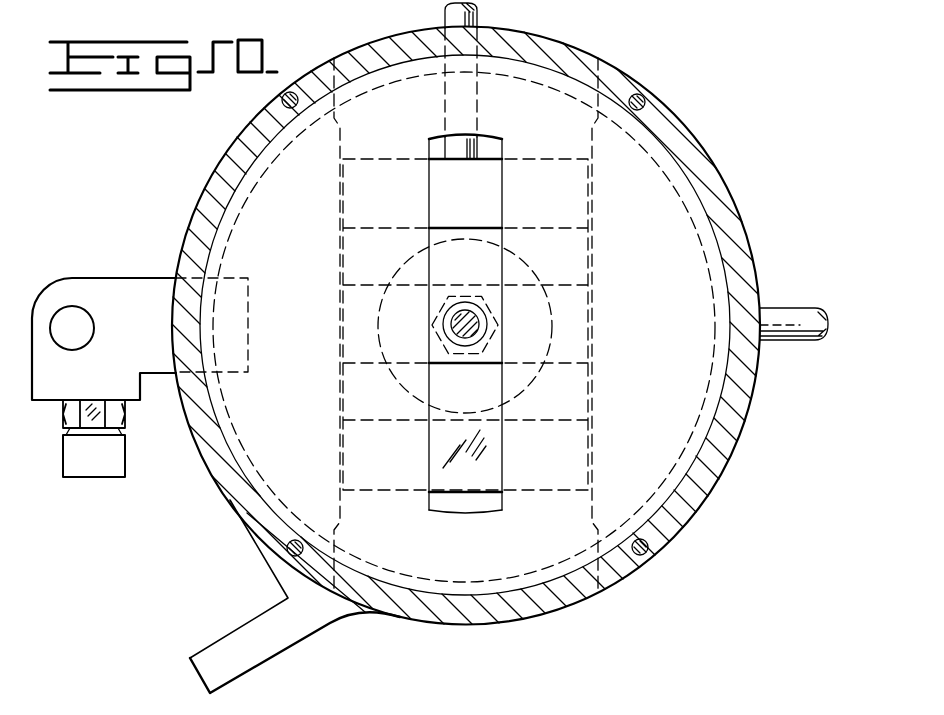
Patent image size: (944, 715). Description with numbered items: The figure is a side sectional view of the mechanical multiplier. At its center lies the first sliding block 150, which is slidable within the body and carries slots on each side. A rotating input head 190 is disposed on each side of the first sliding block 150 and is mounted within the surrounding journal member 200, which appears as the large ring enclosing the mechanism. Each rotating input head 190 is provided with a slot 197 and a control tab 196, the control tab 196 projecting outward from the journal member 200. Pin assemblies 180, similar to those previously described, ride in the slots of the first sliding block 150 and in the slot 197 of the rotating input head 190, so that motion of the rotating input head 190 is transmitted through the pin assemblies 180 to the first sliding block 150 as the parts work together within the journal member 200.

The first sliding block 150 is at (486, 199).
The pin assembly 180 is at (522, 321).
The rotating input head 190 is at (252, 473).
The control tab 196 is at (128, 293).
The slot 197 is at (430, 192).
The journal member 200 is at (230, 157).